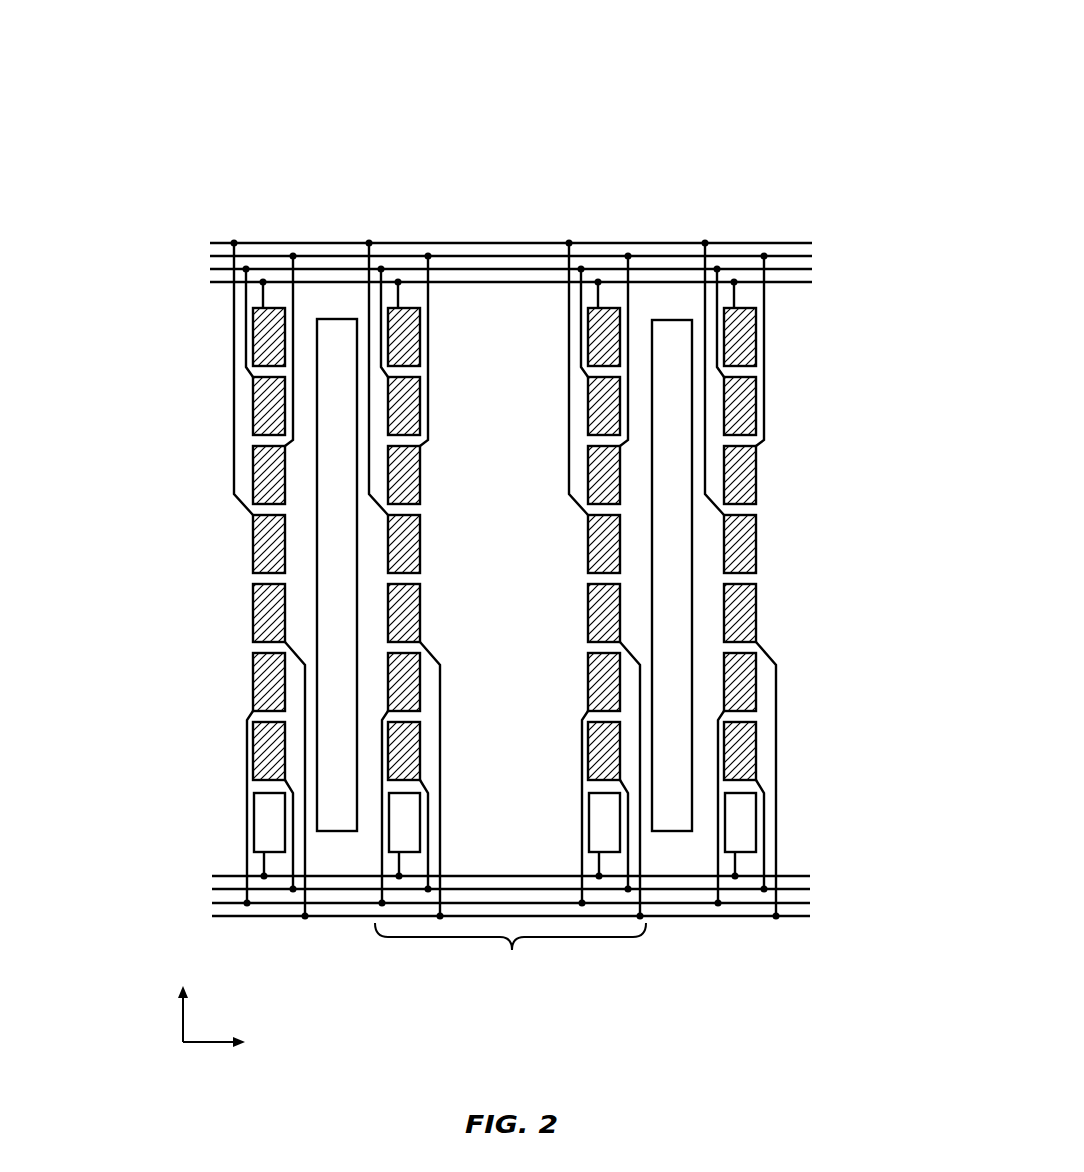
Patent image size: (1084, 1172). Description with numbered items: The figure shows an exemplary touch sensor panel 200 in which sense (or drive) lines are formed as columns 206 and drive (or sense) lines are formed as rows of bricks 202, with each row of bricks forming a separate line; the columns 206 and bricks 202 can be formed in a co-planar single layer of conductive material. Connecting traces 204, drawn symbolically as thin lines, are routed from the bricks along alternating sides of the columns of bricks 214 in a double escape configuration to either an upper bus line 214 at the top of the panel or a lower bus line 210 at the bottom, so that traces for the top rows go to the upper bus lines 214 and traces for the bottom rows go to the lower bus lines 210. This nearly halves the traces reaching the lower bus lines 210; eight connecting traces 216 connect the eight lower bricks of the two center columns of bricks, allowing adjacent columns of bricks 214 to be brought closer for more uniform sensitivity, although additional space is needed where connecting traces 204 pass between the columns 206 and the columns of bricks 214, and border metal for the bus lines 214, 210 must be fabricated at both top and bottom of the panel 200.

The touch sensor panel 200 is at (702, 100).
The bricks 202 is at (747, 308).
The connecting traces 204 is at (811, 670).
The columns 206 is at (336, 319).
The lower bus lines 210 is at (817, 925).
The upper bus lines 214 is at (821, 290).
The connecting traces to lower bus lines 216 is at (512, 950).